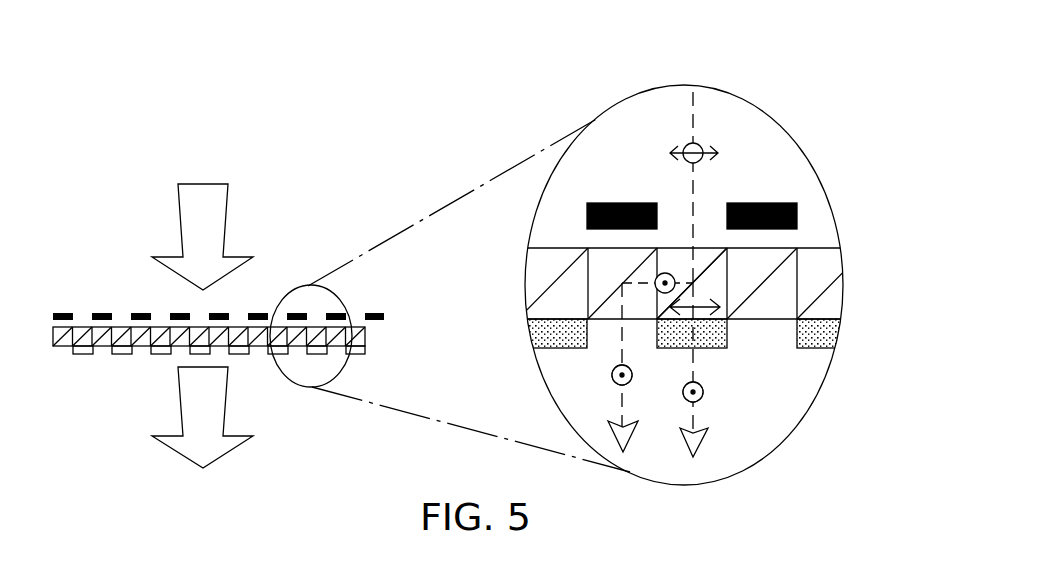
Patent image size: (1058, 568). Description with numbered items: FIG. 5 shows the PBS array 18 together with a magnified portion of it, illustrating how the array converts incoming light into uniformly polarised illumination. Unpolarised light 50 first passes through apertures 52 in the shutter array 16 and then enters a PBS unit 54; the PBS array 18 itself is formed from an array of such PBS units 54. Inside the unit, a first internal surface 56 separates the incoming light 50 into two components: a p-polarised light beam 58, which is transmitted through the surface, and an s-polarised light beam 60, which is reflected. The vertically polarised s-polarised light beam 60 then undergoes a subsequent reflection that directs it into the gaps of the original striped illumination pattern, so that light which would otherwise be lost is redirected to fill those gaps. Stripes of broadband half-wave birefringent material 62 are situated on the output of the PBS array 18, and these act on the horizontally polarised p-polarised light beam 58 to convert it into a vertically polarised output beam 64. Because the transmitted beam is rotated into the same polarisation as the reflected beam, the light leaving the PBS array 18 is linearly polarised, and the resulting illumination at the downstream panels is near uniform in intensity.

The shutter array 16 is at (384, 317).
The PBS array 18 is at (365, 337).
The unpolarised light 50 is at (695, 107).
The apertures 52 is at (737, 231).
The PBS unit 54 is at (679, 263).
The first internal surface 56 is at (717, 278).
The p-polarised light beam 58 is at (693, 293).
The s-polarised light beam 60 is at (652, 282).
The stripes of broadband half-wave birefringent material 62 is at (556, 337).
The vertically polarised output beam 64 is at (695, 417).